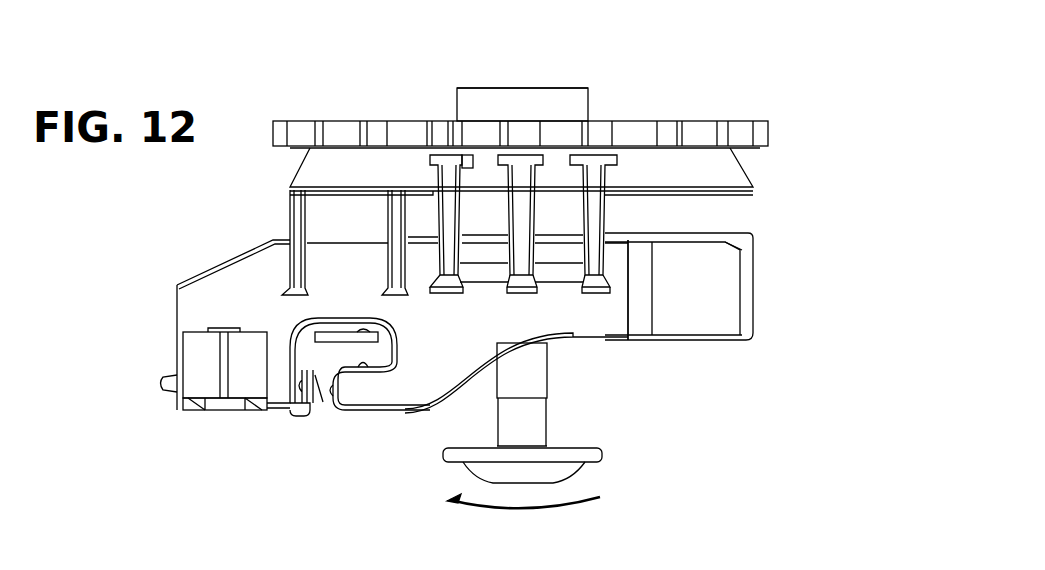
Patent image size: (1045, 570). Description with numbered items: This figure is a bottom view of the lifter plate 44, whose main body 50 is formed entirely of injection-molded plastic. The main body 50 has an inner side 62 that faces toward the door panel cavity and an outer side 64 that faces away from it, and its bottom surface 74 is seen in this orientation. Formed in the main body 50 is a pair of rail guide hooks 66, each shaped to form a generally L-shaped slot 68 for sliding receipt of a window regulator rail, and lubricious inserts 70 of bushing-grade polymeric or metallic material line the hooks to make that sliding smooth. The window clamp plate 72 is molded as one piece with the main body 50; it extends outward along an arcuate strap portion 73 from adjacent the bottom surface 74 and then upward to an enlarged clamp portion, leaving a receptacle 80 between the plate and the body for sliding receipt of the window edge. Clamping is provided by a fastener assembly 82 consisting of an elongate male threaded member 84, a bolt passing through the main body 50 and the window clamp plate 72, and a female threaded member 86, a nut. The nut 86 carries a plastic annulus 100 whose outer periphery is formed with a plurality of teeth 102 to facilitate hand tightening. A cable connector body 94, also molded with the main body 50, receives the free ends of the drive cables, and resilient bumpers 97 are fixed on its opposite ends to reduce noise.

The lifter plate 44 is at (745, 87).
The plastic annulus 100 is at (670, 120).
The teeth 102 is at (740, 120).
The female threaded member 86 is at (500, 88).
The fastener assembly 82 is at (559, 82).
The window clamp plate 72 is at (735, 163).
The receptacle 80 is at (742, 210).
The arcuate strap portion 73 is at (552, 245).
The outer side 64 is at (280, 240).
The bottom surface 74 is at (730, 268).
The main body 50 is at (757, 302).
The inner side 62 is at (723, 340).
The elongate male threaded member 84 is at (547, 428).
The resilient bumpers 97 is at (198, 350).
The cable connector body 94 is at (205, 418).
The lubricious inserts 70 is at (290, 415).
The L-shaped slot 68 is at (320, 408).
The rail guide hooks 66 is at (352, 400).